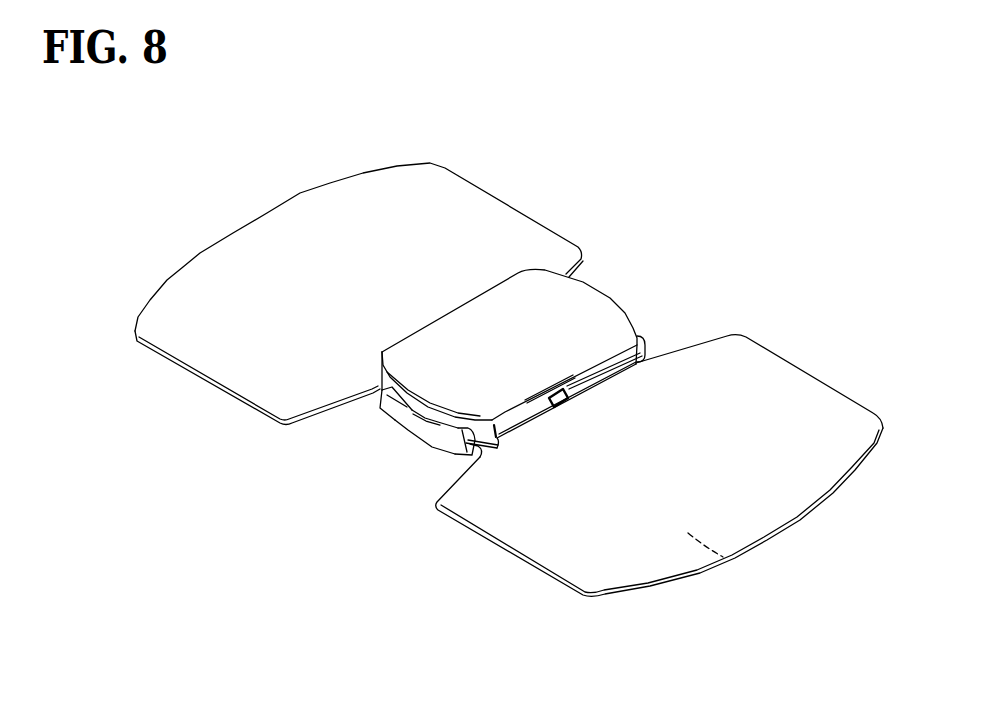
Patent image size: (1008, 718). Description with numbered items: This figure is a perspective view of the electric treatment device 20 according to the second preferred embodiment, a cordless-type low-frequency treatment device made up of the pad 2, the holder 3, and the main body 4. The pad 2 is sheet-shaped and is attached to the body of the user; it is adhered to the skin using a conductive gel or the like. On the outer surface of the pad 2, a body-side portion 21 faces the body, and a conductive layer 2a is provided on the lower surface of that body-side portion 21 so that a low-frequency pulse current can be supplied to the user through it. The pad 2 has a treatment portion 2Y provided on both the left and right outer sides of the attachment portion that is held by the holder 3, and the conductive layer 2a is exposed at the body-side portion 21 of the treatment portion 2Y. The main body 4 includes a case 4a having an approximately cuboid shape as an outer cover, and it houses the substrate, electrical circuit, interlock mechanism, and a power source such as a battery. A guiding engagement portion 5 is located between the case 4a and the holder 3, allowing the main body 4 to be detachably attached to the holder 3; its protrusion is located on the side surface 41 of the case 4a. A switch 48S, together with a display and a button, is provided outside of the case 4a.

The electric treatment device 20 is at (612, 184).
The pad 2 is at (747, 336).
The treatment portion 2Y is at (281, 223).
The body-side portion 21 is at (659, 466).
The conductive layer 2a is at (743, 562).
The main body 4 is at (538, 337).
The case 4a is at (610, 291).
The switch 48S is at (560, 404).
The holder 3 is at (391, 410).
The guiding engagement portion 5 is at (415, 412).
The side surface 41 is at (448, 418).